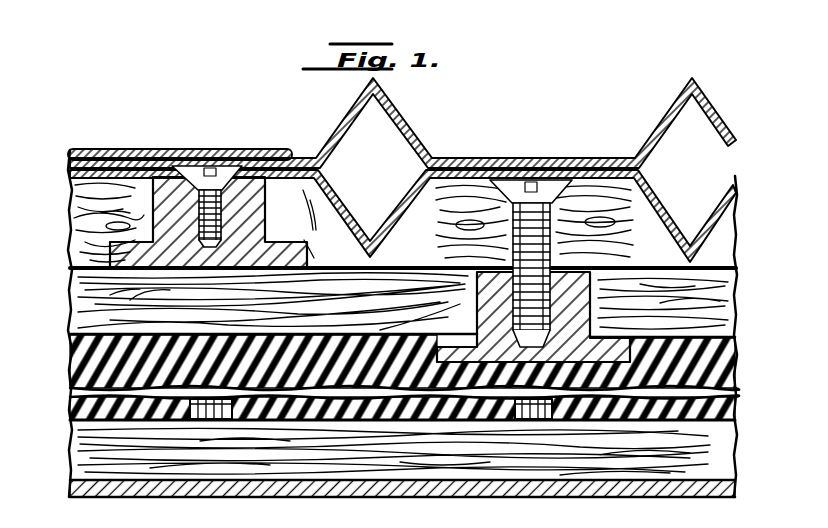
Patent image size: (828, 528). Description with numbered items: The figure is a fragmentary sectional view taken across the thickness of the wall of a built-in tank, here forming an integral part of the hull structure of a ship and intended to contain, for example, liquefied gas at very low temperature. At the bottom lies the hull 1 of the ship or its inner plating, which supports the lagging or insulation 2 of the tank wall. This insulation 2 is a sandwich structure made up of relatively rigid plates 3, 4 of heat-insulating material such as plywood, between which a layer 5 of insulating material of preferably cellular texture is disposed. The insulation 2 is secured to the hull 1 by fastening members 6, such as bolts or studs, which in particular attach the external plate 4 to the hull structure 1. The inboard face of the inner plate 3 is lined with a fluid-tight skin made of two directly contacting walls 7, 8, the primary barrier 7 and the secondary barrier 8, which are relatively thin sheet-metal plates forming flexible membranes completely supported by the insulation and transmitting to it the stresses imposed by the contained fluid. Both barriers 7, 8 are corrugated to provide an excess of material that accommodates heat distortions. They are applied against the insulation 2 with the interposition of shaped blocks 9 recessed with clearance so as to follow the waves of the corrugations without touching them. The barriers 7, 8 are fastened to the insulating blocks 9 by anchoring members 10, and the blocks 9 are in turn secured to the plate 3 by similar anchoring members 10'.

The hull 1 is at (168, 486).
The insulation 2 is at (65, 432).
The inner plate 3 is at (83, 218).
The external plate 4 is at (74, 486).
The layer of insulating material 5 is at (67, 346).
The fastening members 6 is at (215, 413).
The primary barrier 7 is at (406, 128).
The secondary barrier 8 is at (590, 162).
The shaped blocks 9 is at (470, 192).
The anchoring members 10 is at (187, 189).
The anchoring members 10' is at (540, 271).